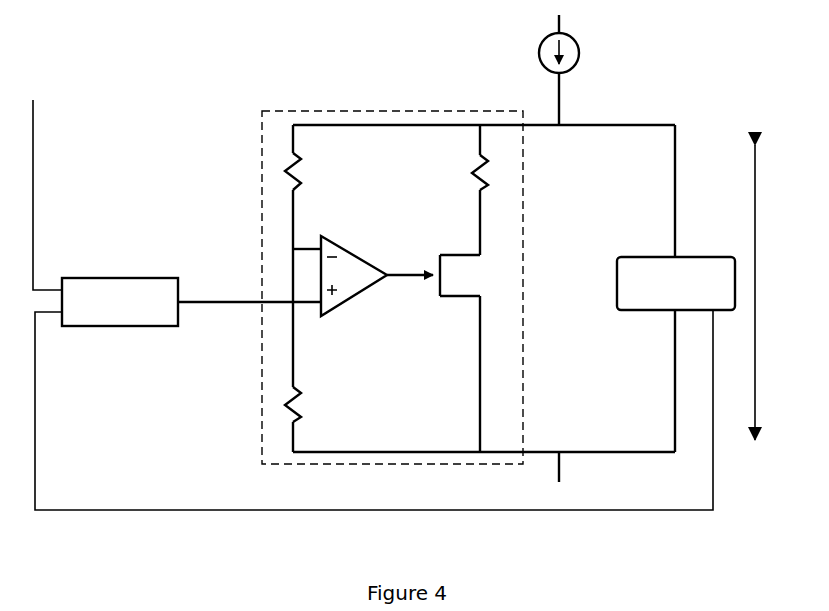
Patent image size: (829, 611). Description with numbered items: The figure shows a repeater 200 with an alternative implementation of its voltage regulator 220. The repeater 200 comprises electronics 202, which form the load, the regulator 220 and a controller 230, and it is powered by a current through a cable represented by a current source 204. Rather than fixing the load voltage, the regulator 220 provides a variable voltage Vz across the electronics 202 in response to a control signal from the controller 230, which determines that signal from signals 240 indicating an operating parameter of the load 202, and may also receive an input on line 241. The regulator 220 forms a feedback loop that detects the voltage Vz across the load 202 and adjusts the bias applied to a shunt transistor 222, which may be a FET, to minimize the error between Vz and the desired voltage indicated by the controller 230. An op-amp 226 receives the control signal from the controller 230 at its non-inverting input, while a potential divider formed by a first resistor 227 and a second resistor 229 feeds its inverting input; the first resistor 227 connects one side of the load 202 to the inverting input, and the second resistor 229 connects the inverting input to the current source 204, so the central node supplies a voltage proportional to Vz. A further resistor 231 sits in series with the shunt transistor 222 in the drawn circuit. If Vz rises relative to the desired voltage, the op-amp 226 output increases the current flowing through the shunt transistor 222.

The repeater 200 is at (698, 90).
The electronics 202 is at (637, 257).
The current source 204 is at (538, 53).
The voltage regulator 220 is at (365, 110).
The shunt transistor 222 is at (457, 253).
The op-amp 226 is at (340, 247).
The first resistor 227 is at (298, 405).
The second resistor 229 is at (290, 163).
The controller 230 is at (150, 278).
The sense resistor 231 is at (488, 173).
The signals 240 is at (374, 428).
The input line 241 is at (62, 195).